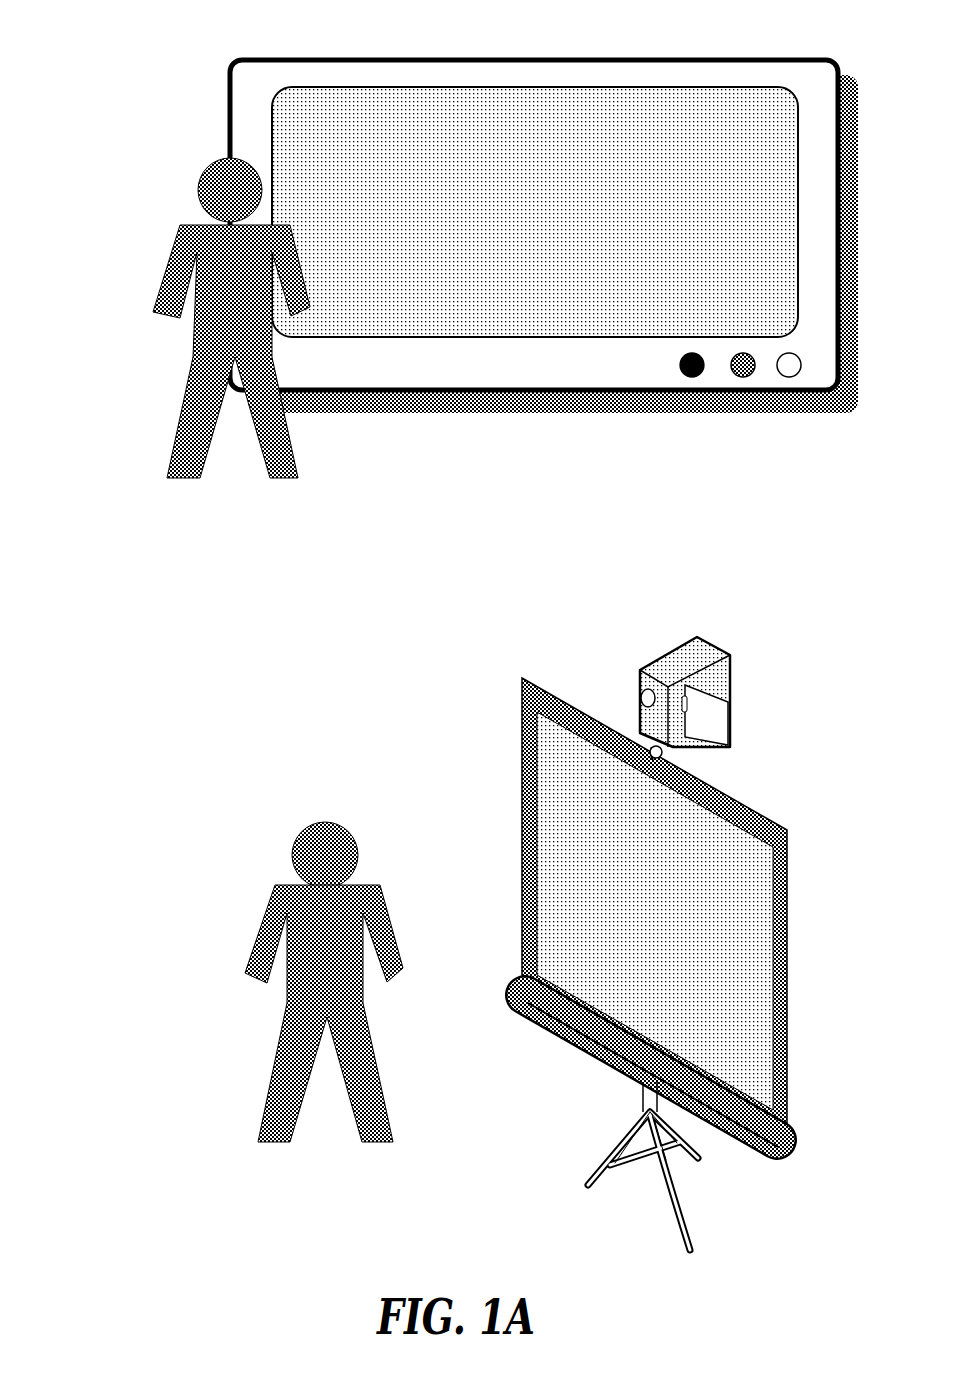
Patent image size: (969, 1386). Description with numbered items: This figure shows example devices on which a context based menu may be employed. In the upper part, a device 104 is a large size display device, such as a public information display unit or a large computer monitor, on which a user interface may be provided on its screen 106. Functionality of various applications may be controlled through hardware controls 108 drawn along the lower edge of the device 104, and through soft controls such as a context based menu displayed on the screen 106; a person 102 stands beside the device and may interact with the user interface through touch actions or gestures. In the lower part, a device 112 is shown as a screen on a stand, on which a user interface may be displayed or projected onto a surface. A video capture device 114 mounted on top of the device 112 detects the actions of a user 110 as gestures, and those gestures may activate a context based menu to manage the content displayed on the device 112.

The user 102 is at (148, 210).
The device 104 is at (372, 44).
The screen 106 is at (506, 348).
The hardware controls 108 is at (728, 346).
The user 110 is at (240, 870).
The device 112 is at (515, 720).
The video capture device 114 is at (740, 630).